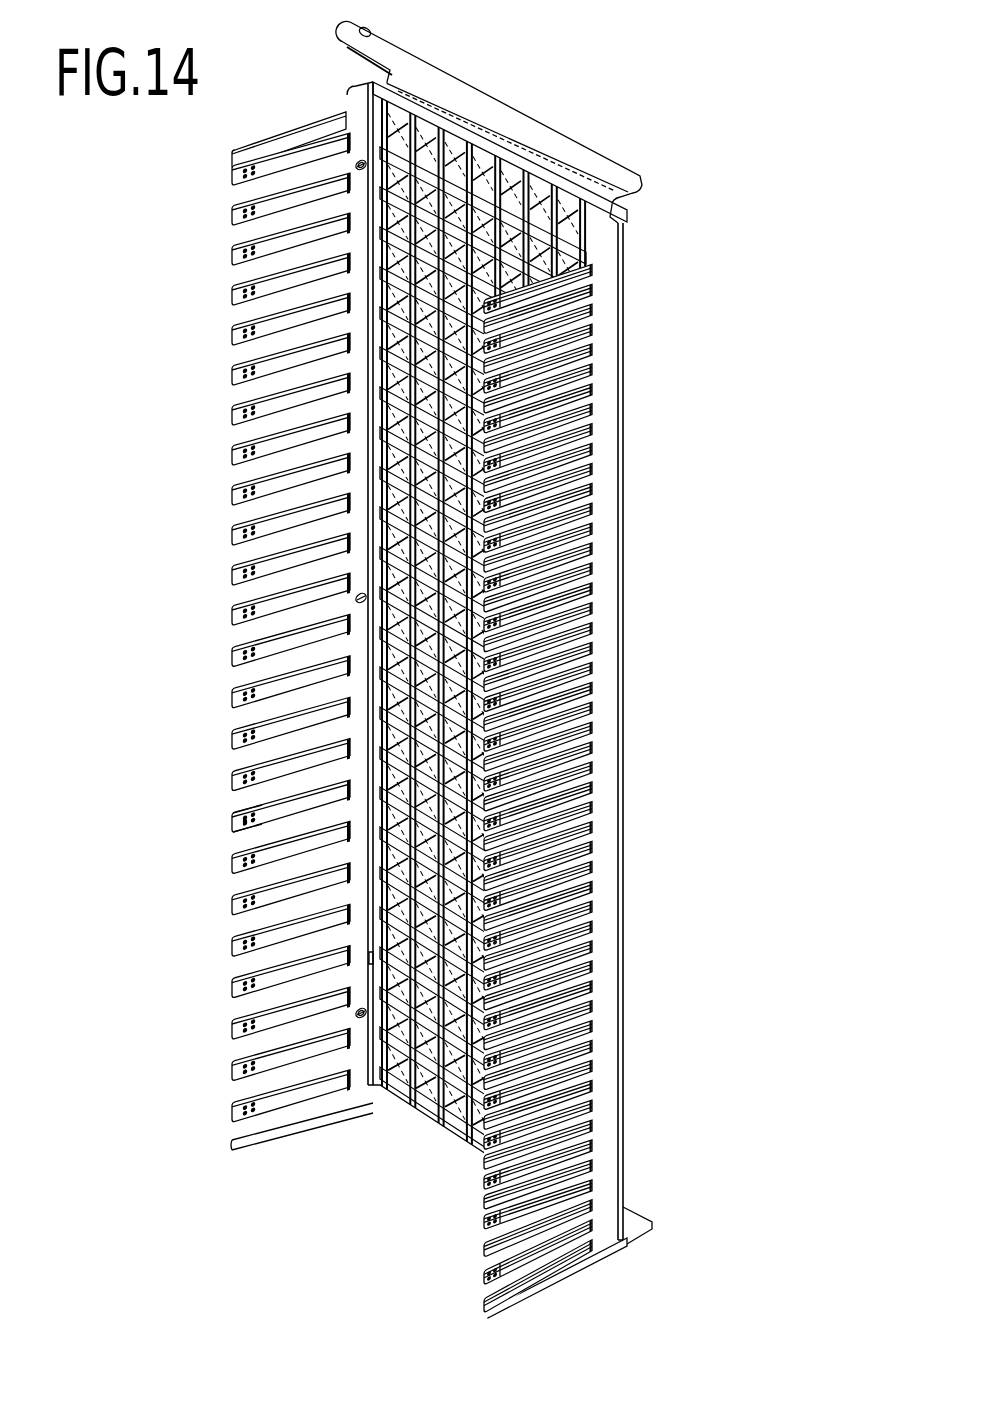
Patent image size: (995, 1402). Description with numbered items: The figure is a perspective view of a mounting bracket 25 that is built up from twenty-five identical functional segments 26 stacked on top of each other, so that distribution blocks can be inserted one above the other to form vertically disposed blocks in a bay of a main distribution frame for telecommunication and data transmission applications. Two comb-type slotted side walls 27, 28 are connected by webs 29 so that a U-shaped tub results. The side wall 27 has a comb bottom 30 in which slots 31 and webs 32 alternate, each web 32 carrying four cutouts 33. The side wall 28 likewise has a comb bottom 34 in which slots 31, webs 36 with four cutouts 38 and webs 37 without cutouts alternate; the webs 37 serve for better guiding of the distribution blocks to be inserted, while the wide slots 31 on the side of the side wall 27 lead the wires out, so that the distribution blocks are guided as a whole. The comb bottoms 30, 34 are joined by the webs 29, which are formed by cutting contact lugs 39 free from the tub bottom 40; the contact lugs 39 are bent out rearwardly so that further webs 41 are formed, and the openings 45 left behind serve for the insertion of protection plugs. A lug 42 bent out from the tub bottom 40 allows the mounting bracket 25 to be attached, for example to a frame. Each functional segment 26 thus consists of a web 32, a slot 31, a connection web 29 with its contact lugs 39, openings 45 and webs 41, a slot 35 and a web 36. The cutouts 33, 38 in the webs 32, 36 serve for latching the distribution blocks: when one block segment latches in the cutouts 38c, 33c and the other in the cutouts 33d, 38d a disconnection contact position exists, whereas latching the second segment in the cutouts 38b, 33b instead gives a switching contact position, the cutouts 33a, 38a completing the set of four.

The mounting bracket 25 is at (181, 314).
The functional segment 26 is at (570, 795).
The side wall 27 is at (278, 1127).
The side wall 28 is at (557, 1272).
The web 29 is at (568, 208).
The comb bottom 30 is at (366, 1057).
The slot 31 is at (255, 618).
The web 32 is at (232, 176).
The cutout 33 is at (236, 644).
The cutout 33a is at (240, 822).
The cutout 33b is at (248, 828).
The cutout 33c is at (246, 808).
The cutout 33d is at (244, 803).
The comb bottom 34 is at (618, 1132).
The slot 35 is at (585, 410).
The web 36 is at (590, 338).
The web 37 is at (557, 432).
The cutout 38 is at (486, 1228).
The cutout 38a is at (503, 923).
The cutout 38b is at (500, 908).
The cutout 38c is at (500, 897).
The cutout 38d is at (488, 860).
The contact lug 39 is at (453, 147).
The tub bottom 40 is at (345, 183).
The web 41 is at (400, 203).
The lug 42 is at (543, 143).
The opening 45 is at (371, 958).